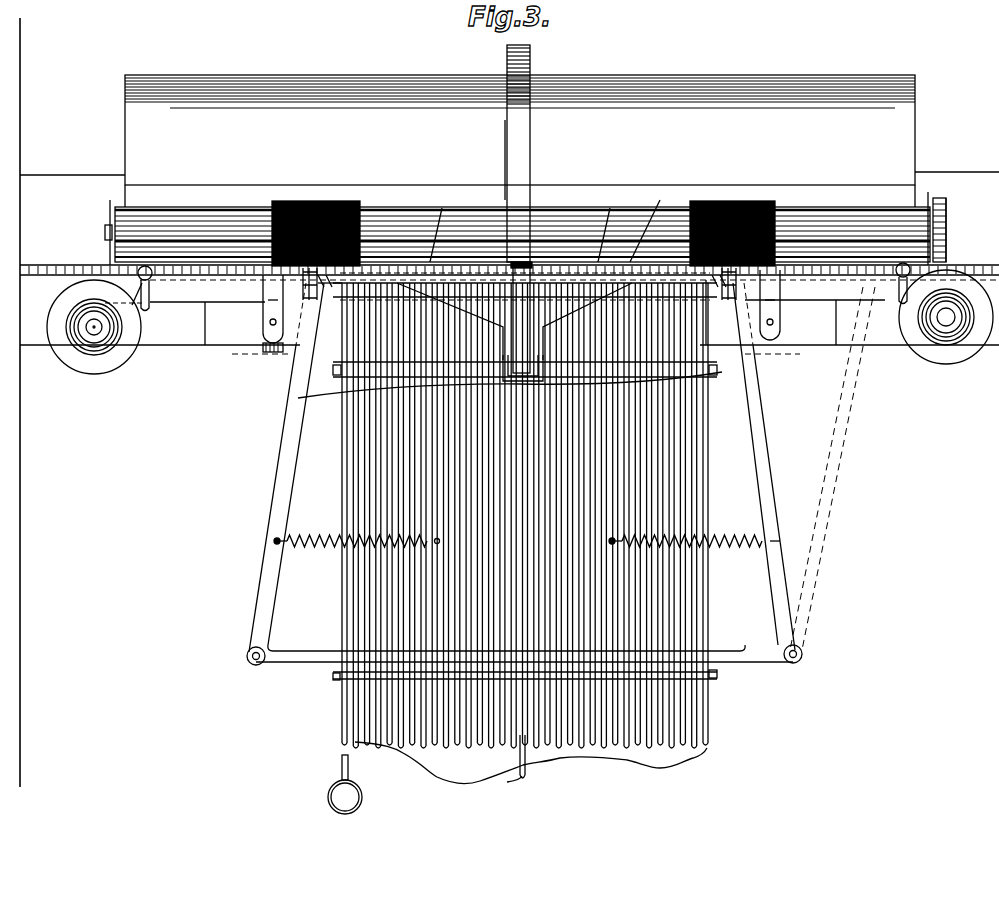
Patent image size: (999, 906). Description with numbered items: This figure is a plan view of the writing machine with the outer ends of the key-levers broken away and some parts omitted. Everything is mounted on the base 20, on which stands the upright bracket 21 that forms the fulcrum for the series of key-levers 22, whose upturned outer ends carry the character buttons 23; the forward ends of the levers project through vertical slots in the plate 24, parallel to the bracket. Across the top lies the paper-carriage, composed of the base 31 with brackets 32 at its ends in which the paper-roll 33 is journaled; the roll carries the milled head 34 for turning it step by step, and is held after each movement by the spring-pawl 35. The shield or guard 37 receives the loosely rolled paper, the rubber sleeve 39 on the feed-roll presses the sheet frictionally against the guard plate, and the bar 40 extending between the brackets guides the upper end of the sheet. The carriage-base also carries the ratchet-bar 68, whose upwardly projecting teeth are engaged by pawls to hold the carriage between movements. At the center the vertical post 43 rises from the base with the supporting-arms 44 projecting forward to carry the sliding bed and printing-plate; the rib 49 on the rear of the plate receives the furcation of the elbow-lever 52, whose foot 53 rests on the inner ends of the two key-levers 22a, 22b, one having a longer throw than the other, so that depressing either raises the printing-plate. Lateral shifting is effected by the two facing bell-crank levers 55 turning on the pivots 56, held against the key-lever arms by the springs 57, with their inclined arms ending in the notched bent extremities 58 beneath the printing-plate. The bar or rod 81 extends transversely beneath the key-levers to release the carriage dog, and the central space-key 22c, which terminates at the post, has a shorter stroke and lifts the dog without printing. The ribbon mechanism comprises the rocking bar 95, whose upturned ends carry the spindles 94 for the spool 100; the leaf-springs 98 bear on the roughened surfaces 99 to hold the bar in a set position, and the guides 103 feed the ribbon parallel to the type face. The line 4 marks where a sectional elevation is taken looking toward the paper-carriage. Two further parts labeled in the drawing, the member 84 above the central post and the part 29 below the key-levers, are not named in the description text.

The base of the paper-carriage 31 is at (515, 146).
The vertical post 84 is at (532, 160).
The shield or guard 37 is at (489, 160).
The paper-roll 33 is at (465, 215).
The rubber sleeve 39 is at (523, 224).
The supporting-arms 44 is at (430, 262).
The bar 40 is at (645, 221).
The brackets 32 is at (110, 246).
The ratchet-bar 68 is at (55, 265).
The milled head 34 is at (946, 212).
The spring-pawl 35 is at (946, 235).
The spindles 94 is at (100, 330).
The spool 100 is at (521, 335).
The guides 103 is at (153, 283).
The bent extremities 58 is at (302, 289).
The leaf-springs 98 is at (262, 335).
The rocking bar 95 is at (511, 313).
The roughened surfaces 99 is at (268, 352).
The section line 4 is at (524, 352).
The plate 24 is at (326, 290).
The bell-crank levers 55 is at (272, 603).
The pivots 56 is at (247, 658).
The base 20 is at (564, 449).
The space-key 22c is at (520, 723).
The bar or rod 81 is at (720, 378).
The upright bracket 21 is at (334, 682).
The rib 49 is at (525, 283).
The vertical post 43 is at (545, 335).
The elbow-lever 52 is at (521, 317).
The foot 53 is at (503, 368).
The key-lever 22a is at (300, 396).
The key-lever 22b is at (730, 370).
The springs 57 is at (312, 540).
The key-levers 22 is at (531, 768).
The hook 29 is at (514, 780).
The buttons 23 is at (359, 784).